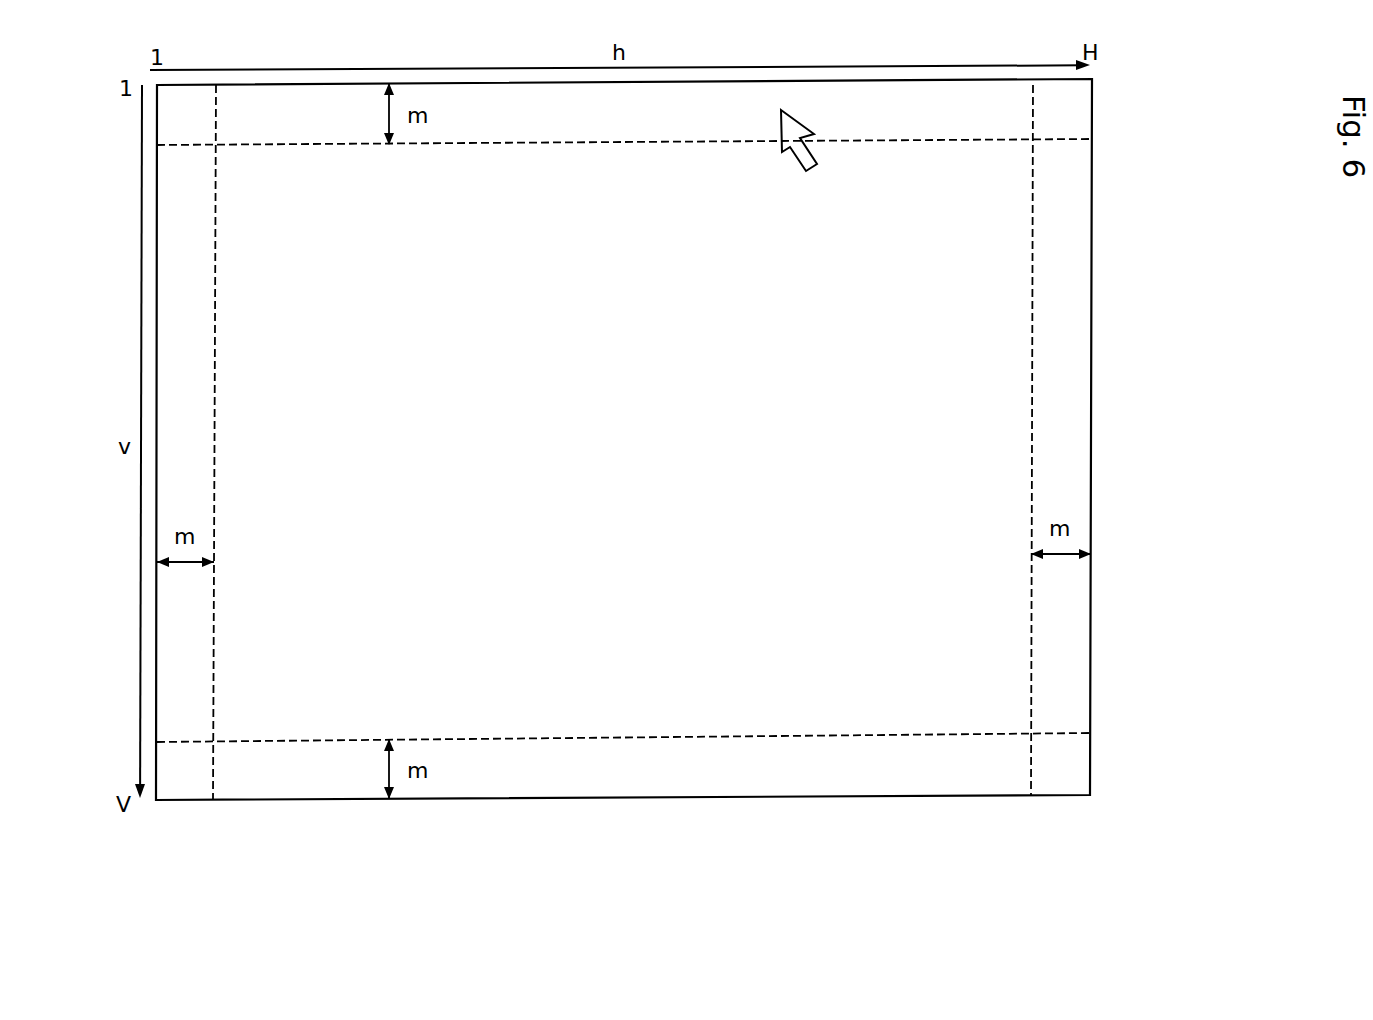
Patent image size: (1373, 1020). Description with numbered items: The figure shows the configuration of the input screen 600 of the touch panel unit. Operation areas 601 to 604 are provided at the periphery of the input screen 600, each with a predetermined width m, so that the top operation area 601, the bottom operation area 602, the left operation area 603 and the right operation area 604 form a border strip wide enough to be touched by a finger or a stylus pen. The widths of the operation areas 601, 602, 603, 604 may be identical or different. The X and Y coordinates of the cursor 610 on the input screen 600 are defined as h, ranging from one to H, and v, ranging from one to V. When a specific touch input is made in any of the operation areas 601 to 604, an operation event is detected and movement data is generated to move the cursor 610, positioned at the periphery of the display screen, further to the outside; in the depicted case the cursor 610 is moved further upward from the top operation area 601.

The input screen 600 is at (1100, 371).
The top operation area 601 is at (300, 115).
The operation area 602 is at (678, 765).
The operation area 603 is at (185, 290).
The operation area 604 is at (1061, 286).
The cursor 610 is at (795, 122).